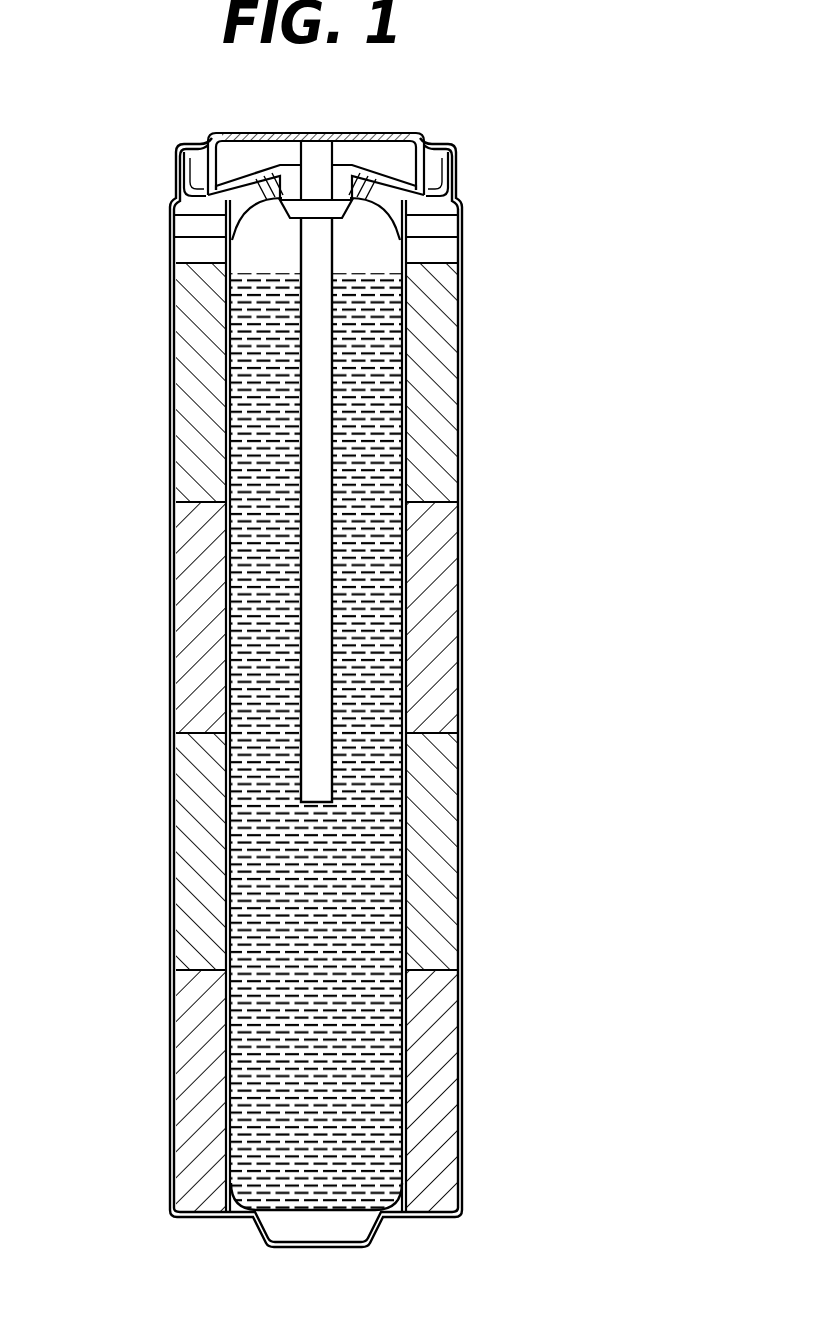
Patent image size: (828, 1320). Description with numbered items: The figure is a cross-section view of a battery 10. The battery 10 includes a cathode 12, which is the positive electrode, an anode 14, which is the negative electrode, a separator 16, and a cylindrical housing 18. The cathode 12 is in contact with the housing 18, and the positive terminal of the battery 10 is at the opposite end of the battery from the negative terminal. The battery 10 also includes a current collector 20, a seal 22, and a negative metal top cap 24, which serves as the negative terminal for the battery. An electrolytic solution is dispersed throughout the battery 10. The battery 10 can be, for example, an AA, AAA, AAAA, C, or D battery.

The battery 10 is at (586, 216).
The cathode 12 is at (455, 356).
The anode 14 is at (378, 830).
The separator 16 is at (227, 662).
The cylindrical housing 18 is at (170, 463).
The current collector 20 is at (320, 613).
The seal 22 is at (187, 217).
The negative metal top cap 24 is at (417, 121).